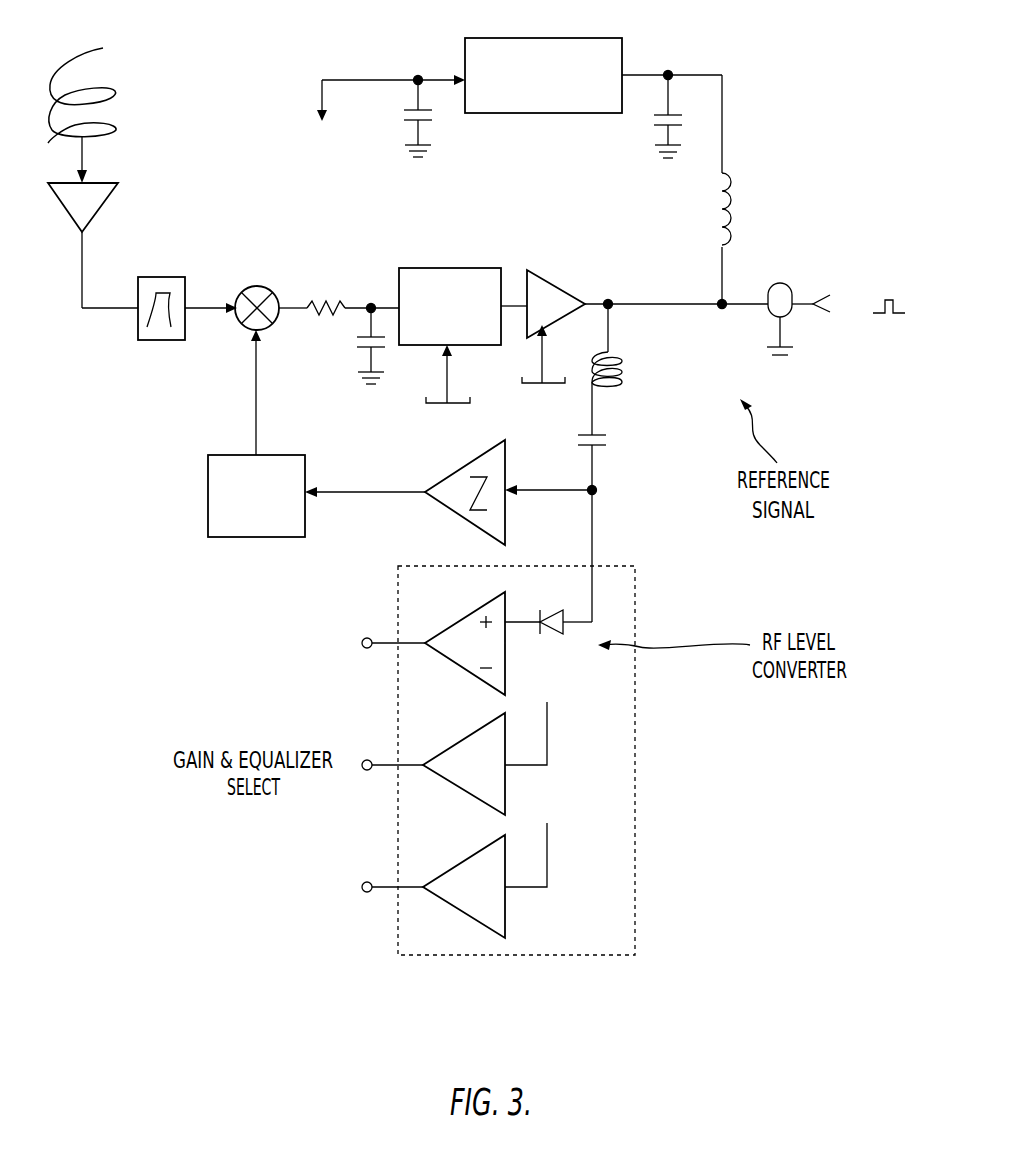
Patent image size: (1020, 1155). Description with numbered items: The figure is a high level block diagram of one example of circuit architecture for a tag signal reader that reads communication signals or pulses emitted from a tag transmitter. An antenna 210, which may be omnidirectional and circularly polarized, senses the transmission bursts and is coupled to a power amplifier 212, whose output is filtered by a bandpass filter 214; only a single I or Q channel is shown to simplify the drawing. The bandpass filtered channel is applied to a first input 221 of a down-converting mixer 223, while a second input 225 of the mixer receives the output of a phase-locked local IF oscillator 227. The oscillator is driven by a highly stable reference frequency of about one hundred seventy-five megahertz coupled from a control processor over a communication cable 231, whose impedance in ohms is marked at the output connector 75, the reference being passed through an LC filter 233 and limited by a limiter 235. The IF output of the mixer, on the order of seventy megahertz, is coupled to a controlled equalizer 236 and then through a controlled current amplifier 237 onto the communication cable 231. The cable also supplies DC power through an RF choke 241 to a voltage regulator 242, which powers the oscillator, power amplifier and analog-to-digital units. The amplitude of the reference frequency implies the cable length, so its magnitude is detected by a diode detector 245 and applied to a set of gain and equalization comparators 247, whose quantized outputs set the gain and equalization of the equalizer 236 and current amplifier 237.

The antenna 210 is at (105, 92).
The power amplifier 212 is at (65, 208).
The bandpass filter 214 is at (157, 340).
The first input 221 is at (240, 295).
The down-converting mixer 223 is at (253, 284).
The second input 225 is at (250, 328).
The phase-locked local IF oscillator 227 is at (208, 502).
The communication cable 231 is at (660, 304).
The LC filter 233 is at (612, 357).
The limiter 235 is at (442, 478).
The controlled equalizer 236 is at (458, 268).
The controlled current amplifier 237 is at (556, 283).
The RF choke 241 is at (715, 205).
The voltage regulator 242 is at (606, 38).
The diode detector 245 is at (553, 615).
The gain and equalization comparators 247 is at (568, 852).
The output connector 75 is at (836, 319).